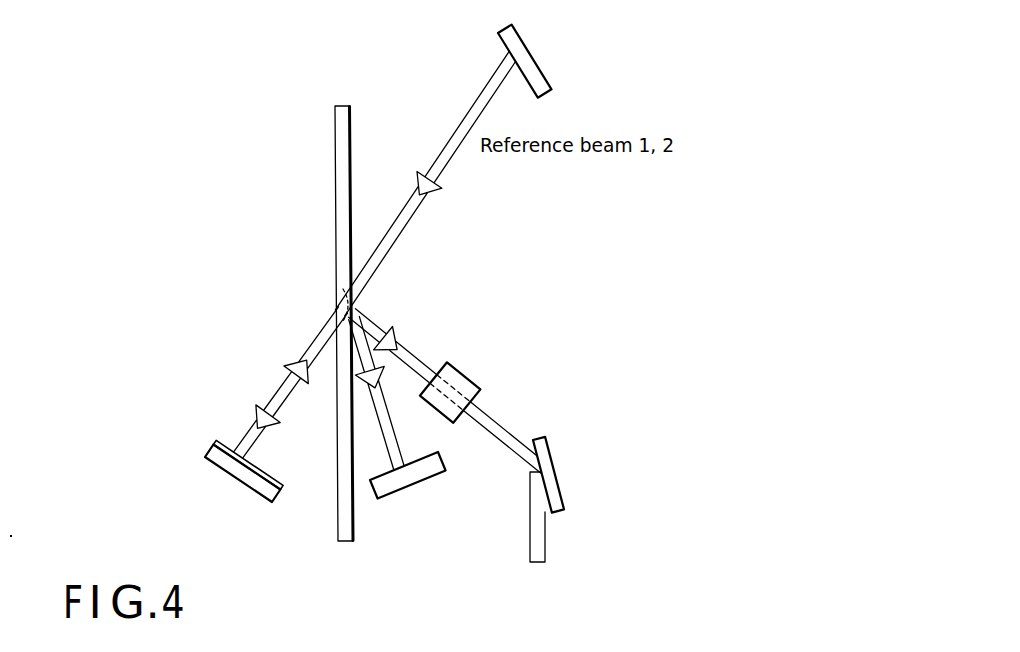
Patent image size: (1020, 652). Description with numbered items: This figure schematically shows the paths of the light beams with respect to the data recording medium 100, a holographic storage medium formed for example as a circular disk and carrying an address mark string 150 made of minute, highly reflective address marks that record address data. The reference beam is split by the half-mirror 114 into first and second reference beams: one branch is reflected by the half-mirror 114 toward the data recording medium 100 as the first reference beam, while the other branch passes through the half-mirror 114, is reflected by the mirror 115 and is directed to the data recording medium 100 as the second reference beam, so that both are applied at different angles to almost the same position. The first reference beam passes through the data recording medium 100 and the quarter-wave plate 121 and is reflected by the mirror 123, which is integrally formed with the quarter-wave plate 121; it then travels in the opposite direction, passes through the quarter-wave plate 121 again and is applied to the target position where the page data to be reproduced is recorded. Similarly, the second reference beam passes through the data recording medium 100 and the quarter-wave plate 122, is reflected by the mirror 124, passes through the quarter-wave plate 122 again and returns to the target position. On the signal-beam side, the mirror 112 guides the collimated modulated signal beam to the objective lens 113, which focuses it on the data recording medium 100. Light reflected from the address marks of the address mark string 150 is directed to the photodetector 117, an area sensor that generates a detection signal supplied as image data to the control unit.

The data recording medium 100 is at (335, 177).
The address mark string 150 is at (337, 303).
The half-mirror 114 is at (572, 61).
The mirror 115 is at (548, 81).
The δ/4 plate 122 is at (215, 444).
The δ/4 plate 121 is at (215, 441).
The mirror used for reproduction 124 is at (261, 499).
The mirror used for reproduction 123 is at (260, 500).
The objective lens 113 is at (478, 383).
The mirror 112 is at (547, 443).
The photodetector 117 is at (423, 483).